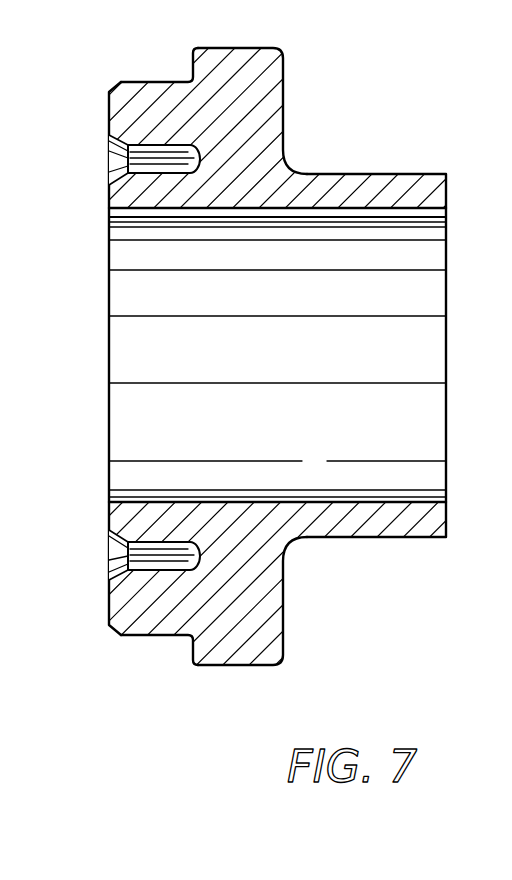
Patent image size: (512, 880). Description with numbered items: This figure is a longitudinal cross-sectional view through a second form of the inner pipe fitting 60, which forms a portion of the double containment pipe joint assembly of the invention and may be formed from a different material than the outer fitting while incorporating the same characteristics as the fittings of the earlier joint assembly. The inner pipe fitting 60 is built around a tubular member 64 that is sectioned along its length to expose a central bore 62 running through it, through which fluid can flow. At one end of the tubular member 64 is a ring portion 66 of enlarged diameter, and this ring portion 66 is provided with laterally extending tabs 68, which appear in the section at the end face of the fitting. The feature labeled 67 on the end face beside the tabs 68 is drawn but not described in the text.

The inner pipe fitting 60 is at (306, 138).
The central bore 62 is at (400, 302).
The tubular member 64 is at (355, 182).
The ring portion 66 is at (250, 46).
The countersink 67 is at (110, 197).
The laterally extending tabs 68 is at (123, 109).